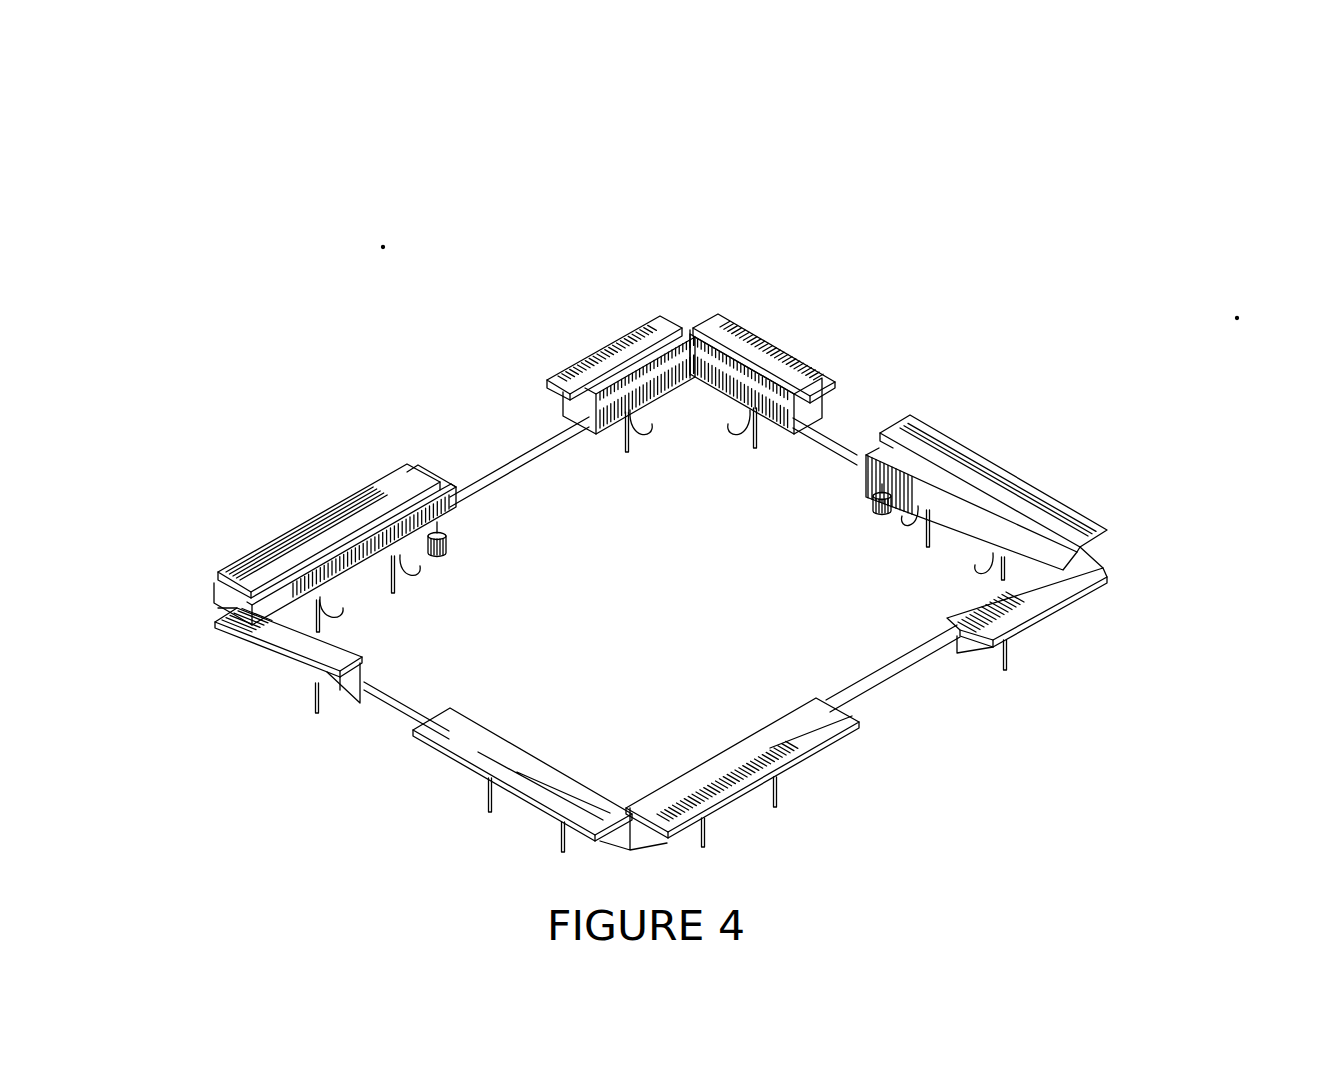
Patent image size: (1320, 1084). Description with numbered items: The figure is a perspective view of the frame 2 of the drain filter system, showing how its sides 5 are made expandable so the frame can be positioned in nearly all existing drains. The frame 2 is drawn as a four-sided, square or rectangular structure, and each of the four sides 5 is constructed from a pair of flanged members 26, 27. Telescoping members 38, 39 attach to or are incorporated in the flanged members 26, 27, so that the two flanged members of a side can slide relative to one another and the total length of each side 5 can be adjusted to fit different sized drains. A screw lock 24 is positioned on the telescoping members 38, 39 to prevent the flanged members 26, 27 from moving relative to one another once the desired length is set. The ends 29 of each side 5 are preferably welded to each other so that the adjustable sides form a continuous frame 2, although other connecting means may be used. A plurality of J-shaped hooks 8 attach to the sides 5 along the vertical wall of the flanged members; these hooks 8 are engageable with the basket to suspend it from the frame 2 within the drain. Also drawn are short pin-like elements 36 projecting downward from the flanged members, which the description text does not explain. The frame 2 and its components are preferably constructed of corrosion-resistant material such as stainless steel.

The frame 2 is at (748, 257).
The sides 5 is at (940, 450).
The J-shaped hooks 8 is at (417, 577).
The screw lock 24 is at (453, 550).
The flanged member 26 is at (352, 513).
The flanged member 27 is at (612, 350).
The ends 29 is at (712, 322).
The leg pin 36 is at (775, 808).
The telescoping member 38 is at (462, 512).
The telescoping member 39 is at (607, 423).